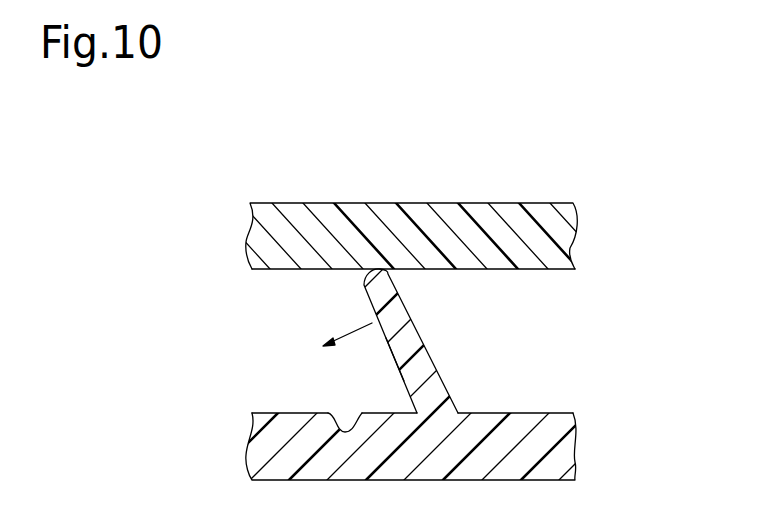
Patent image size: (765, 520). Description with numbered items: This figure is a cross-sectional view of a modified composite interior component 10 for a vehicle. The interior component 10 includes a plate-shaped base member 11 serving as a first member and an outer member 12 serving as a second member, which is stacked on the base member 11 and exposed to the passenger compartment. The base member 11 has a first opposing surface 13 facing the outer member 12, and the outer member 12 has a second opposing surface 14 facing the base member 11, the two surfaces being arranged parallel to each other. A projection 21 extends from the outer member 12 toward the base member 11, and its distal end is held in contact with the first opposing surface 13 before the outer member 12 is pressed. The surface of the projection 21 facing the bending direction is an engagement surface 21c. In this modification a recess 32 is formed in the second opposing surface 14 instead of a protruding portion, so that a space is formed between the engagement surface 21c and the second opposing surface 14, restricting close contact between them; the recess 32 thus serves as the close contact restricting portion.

The interior component 10 is at (188, 202).
The base member 11 is at (572, 245).
The outer member 12 is at (576, 447).
The first opposing surface 13 is at (271, 269).
The second opposing surface 14 is at (269, 413).
The projection 21 is at (419, 333).
The engagement surface 21c is at (396, 362).
The recess 32 is at (343, 430).